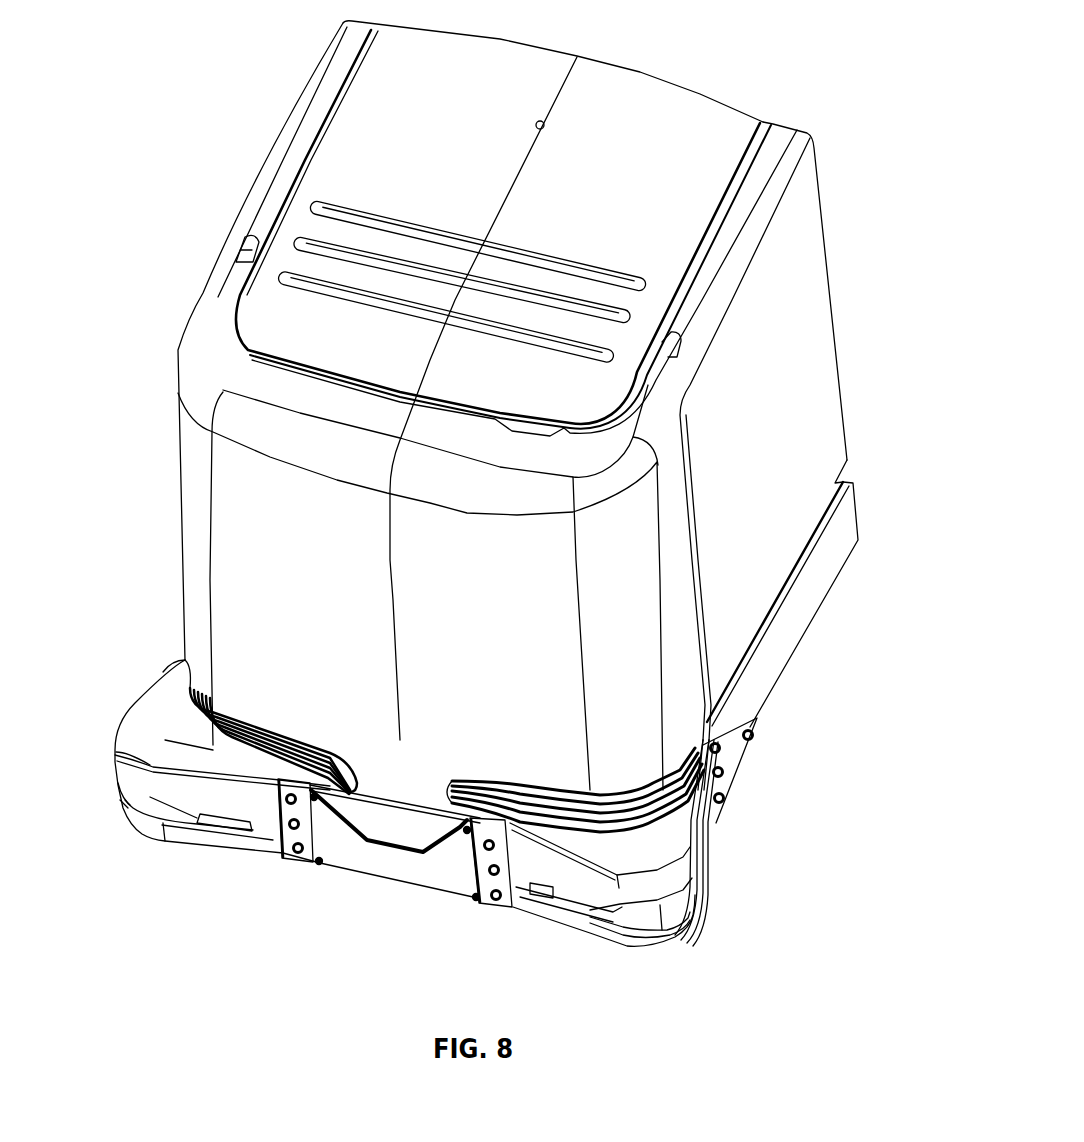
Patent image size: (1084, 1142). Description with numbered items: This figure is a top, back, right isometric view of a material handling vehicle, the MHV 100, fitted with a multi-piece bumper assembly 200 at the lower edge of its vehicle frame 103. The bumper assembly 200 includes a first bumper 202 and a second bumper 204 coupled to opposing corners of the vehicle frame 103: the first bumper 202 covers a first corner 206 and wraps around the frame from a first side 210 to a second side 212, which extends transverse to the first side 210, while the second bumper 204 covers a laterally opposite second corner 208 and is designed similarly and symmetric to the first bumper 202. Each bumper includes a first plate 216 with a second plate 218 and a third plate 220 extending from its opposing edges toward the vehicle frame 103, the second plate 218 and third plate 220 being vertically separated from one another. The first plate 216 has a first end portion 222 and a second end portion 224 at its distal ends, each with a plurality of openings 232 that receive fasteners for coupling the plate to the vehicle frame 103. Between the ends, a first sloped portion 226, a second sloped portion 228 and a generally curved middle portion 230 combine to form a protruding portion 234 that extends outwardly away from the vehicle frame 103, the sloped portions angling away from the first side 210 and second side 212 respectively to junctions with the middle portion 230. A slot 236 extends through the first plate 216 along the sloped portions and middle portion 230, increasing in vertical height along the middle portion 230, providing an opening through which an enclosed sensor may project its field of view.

The MHV 100 is at (722, 82).
The vehicle frame 103 is at (862, 512).
The bumper assembly 200 is at (257, 953).
The first bumper 202 is at (740, 821).
The second bumper 204 is at (100, 743).
The first corner 206 is at (638, 770).
The second corner 208 is at (226, 688).
The first side 210 is at (828, 559).
The second side 212 is at (390, 826).
The first plate 216 is at (173, 838).
The second plate 218 is at (141, 708).
The third plate 220 is at (162, 797).
The first end portion 222 is at (733, 748).
The second end portion 224 is at (283, 848).
The first sloped portion 226 is at (163, 673).
The second sloped portion 228 is at (205, 840).
The middle portion 230 is at (152, 836).
The openings 232 is at (750, 722).
The protruding portion 234 is at (108, 781).
The slot 236 is at (123, 802).